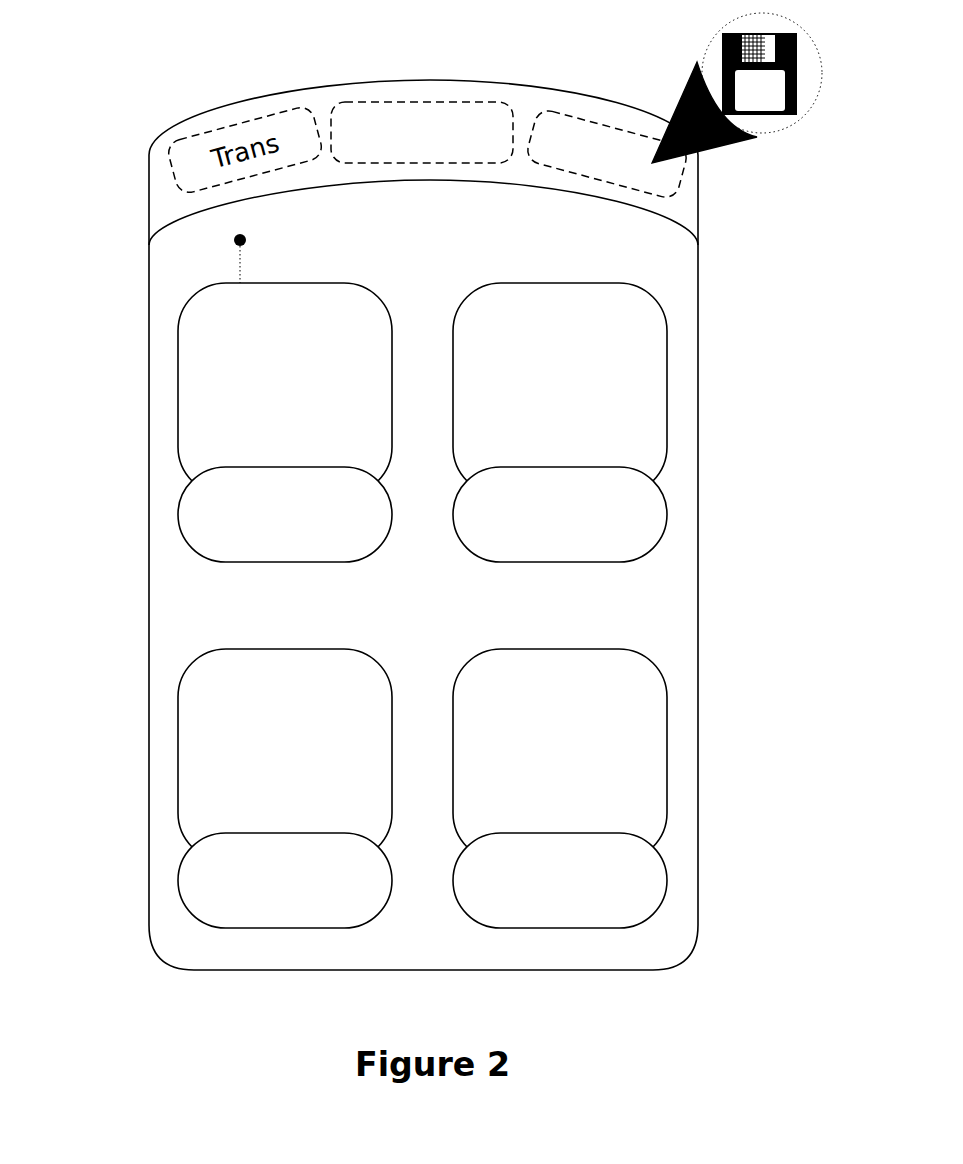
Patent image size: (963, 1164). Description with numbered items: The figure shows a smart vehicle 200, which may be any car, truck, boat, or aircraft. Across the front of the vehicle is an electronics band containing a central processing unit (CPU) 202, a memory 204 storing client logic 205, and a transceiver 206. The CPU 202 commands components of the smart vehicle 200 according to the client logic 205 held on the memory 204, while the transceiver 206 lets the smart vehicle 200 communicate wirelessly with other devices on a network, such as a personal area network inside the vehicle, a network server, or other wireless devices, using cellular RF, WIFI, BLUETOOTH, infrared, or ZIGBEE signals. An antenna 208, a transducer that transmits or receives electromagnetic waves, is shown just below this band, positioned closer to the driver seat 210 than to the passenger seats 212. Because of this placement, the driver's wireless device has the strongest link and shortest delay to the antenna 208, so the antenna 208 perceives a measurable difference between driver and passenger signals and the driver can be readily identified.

The smart vehicle 200 is at (283, 970).
The central processing unit (CPU) 202 is at (412, 102).
The memory 204 is at (670, 197).
The client logic 205 is at (724, 72).
The transceiver 206 is at (213, 100).
The antenna 208 is at (292, 225).
The driver seat 210 is at (178, 392).
The passenger seats 212 is at (668, 390).